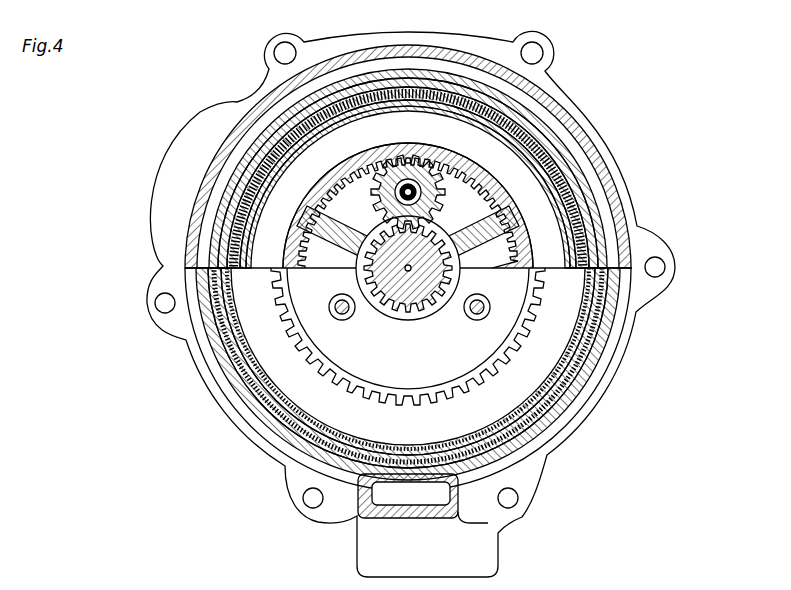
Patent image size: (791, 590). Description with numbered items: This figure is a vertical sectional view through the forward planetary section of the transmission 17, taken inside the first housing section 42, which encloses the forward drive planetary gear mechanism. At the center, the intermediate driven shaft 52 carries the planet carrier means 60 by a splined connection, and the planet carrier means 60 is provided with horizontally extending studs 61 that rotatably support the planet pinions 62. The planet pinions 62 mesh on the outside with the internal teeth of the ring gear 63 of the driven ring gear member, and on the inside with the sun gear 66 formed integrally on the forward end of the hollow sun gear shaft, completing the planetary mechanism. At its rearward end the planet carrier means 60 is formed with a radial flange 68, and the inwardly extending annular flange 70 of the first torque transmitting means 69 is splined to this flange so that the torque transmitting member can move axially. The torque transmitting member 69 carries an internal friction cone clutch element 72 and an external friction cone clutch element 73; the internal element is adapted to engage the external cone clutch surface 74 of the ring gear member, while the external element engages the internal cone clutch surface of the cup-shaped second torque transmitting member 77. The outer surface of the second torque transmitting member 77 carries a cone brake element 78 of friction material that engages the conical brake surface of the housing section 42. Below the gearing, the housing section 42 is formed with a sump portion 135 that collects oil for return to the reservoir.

The transmission 17 is at (426, 46).
The first housing section 42 is at (570, 114).
The second torque transmitting member 77 is at (560, 147).
The external friction cone clutch element 73 is at (562, 164).
The first torque transmitting means 69 is at (558, 179).
The internal friction cone clutch element 72 is at (559, 201).
The external cone clutch surface 74 is at (559, 218).
The ring gear 63 is at (494, 180).
The planet carrier means 60 is at (487, 222).
The planet pinions 62 is at (432, 192).
The studs 61 is at (434, 214).
The sun gear 66 is at (361, 262).
The intermediate driven shaft 52 is at (442, 258).
The radial flange 68 is at (383, 360).
The inwardly extending annular flange 70 is at (602, 328).
The cone brake element 78 is at (588, 402).
The sump portion 135 is at (378, 497).